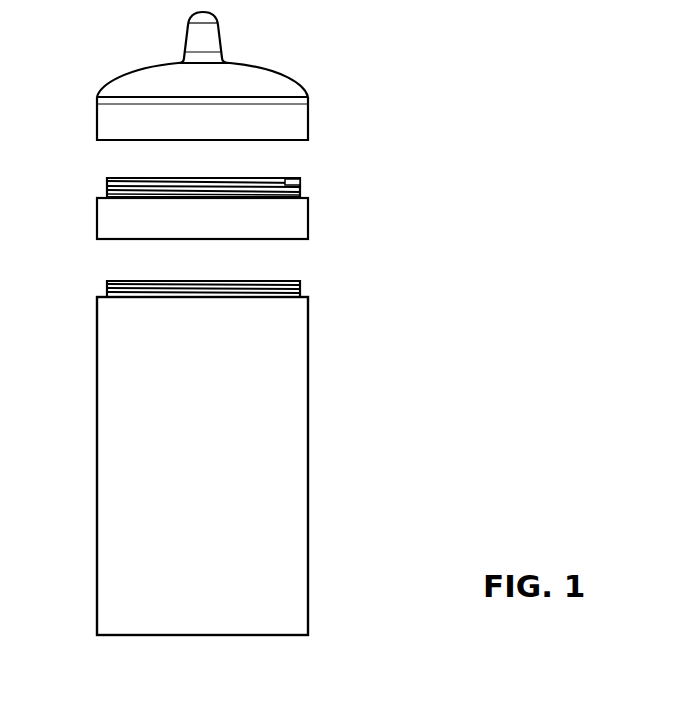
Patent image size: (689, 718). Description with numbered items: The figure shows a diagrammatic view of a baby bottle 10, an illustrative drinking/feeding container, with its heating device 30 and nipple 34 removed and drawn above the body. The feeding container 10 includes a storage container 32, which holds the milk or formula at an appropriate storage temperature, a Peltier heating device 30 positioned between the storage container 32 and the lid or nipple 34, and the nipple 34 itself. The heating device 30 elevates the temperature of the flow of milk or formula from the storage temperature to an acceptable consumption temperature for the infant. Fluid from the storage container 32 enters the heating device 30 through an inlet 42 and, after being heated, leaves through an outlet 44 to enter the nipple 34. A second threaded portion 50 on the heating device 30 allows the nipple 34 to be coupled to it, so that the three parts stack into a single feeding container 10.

The baby bottle 10 is at (400, 293).
The Peltier heating device 30 is at (354, 206).
The storage container 32 is at (308, 455).
The nipple 34 is at (308, 110).
The inlet 42 is at (281, 205).
The outlet 44 is at (129, 166).
The second threaded portion 50 is at (297, 180).